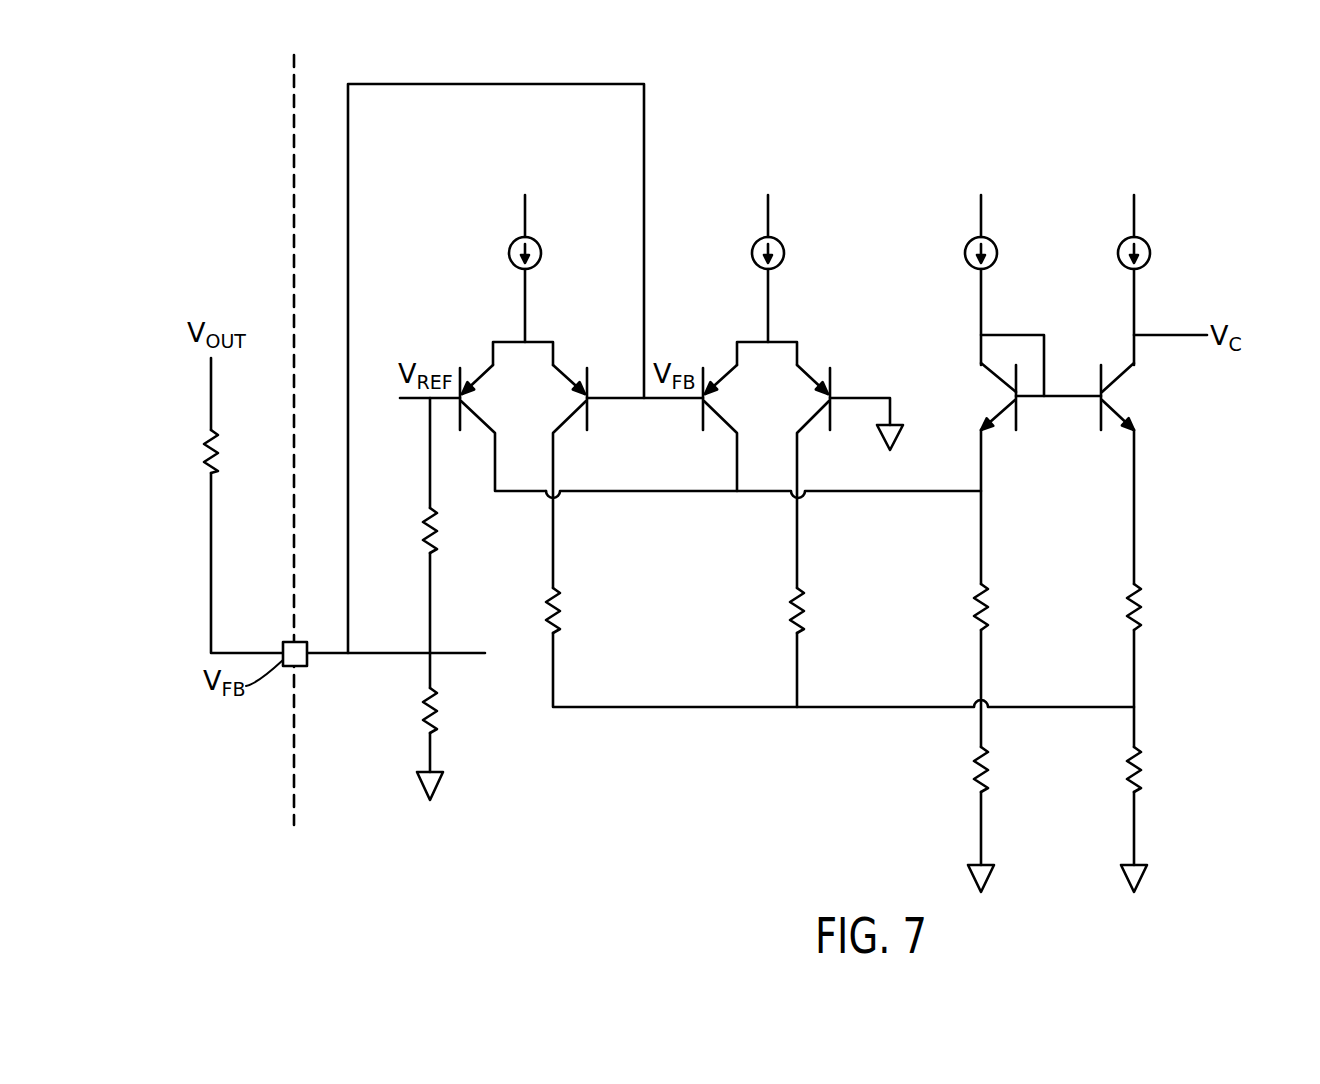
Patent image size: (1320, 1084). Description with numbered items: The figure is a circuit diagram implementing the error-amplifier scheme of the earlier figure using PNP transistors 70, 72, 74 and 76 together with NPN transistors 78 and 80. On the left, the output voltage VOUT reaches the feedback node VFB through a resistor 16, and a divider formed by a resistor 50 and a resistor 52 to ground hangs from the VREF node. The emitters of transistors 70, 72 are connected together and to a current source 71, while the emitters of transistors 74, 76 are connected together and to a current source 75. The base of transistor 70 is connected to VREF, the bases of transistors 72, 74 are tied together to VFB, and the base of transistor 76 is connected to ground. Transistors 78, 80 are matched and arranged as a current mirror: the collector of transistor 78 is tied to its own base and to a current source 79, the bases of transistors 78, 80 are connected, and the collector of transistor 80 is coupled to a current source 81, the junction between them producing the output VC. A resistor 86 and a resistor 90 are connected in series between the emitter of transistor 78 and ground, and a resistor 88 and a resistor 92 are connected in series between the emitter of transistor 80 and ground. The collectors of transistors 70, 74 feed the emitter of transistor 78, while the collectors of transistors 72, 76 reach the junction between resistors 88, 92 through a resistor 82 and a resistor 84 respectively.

The resistor 16 is at (205, 455).
The resistor 50 is at (425, 532).
The resistor 52 is at (425, 700).
The PNP transistor 70 is at (484, 374).
The current source 71 is at (539, 246).
The PNP transistor 72 is at (570, 418).
The PNP transistor 74 is at (722, 418).
The current source 75 is at (782, 246).
The PNP transistor 76 is at (812, 374).
The NPN transistor 78 is at (990, 380).
The current source 79 is at (995, 245).
The NPN transistor 80 is at (1112, 402).
The current source 81 is at (1149, 245).
The resistor 82 is at (548, 614).
The resistor 84 is at (791, 614).
The resistor 86 is at (975, 608).
The resistor 88 is at (1128, 608).
The resistor 90 is at (975, 765).
The resistor 92 is at (1128, 765).